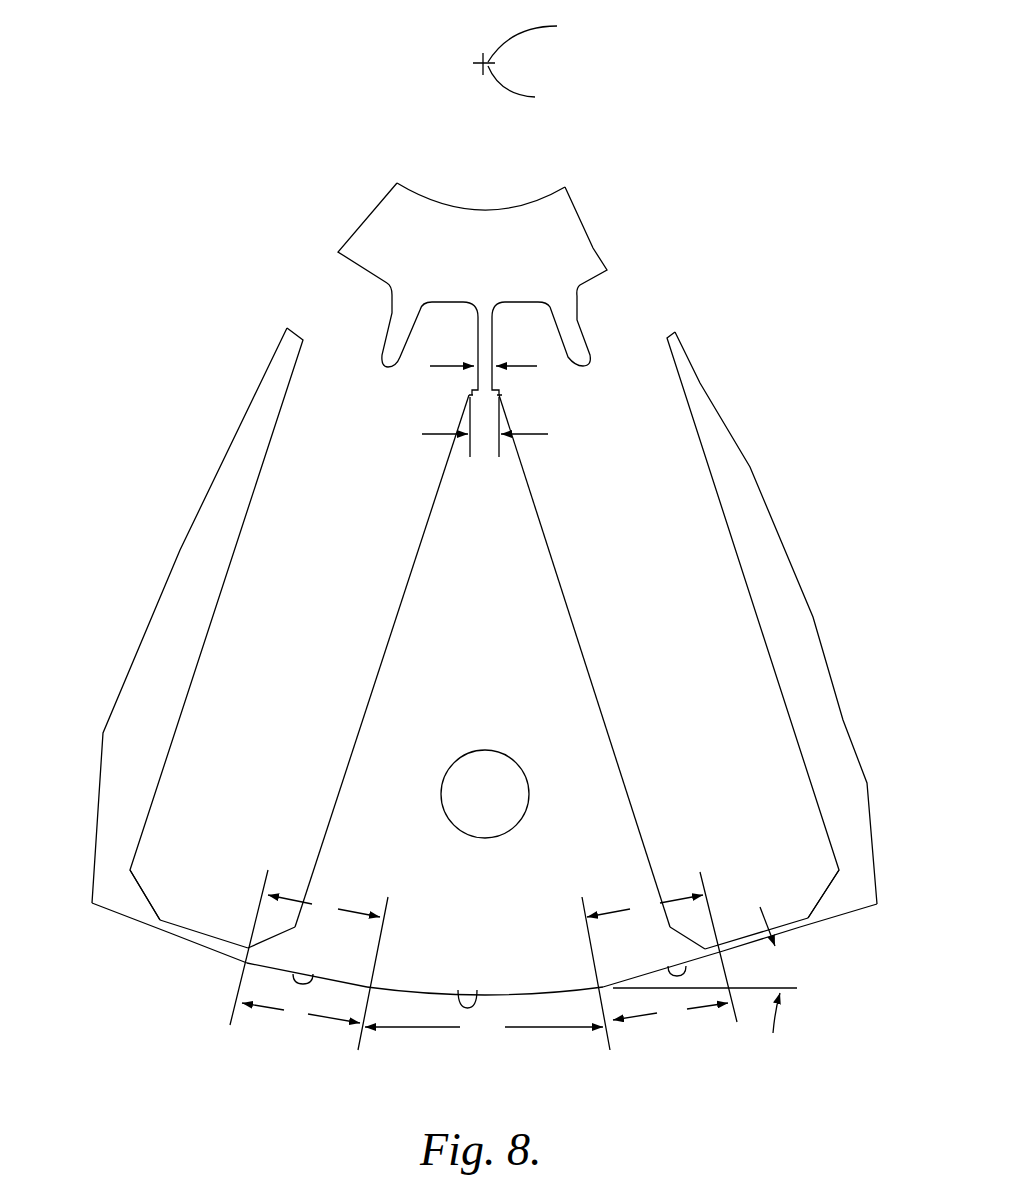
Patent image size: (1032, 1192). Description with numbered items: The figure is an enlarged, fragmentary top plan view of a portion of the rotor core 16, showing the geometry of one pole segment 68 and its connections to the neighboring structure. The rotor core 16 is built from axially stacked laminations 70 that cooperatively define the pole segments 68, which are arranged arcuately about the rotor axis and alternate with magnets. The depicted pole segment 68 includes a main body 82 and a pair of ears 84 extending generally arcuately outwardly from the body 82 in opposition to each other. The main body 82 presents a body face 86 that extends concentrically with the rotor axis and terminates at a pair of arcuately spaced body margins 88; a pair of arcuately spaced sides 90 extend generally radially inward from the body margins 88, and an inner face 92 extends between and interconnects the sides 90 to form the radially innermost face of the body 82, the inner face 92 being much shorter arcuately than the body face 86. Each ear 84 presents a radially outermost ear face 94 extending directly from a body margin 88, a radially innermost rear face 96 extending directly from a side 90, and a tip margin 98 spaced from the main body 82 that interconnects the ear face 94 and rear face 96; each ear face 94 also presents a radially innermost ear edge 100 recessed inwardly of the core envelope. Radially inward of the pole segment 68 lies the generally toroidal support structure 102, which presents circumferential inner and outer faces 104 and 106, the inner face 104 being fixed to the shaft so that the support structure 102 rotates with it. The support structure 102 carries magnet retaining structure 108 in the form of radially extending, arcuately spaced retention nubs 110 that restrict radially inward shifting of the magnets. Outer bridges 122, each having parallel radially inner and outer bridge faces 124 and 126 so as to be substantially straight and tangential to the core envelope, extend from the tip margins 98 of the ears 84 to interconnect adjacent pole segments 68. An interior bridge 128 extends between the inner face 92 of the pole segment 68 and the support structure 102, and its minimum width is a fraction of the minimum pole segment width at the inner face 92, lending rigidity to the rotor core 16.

The rotor core 16 is at (708, 131).
The pole segment 68 is at (543, 645).
The lamination 70 is at (107, 928).
The main body 82 is at (577, 707).
The ear 84 is at (273, 953).
The body face 86 is at (477, 990).
The body margin 88 is at (368, 987).
The side 90 is at (207, 637).
The inner face 92 is at (499, 389).
The ear face 94 is at (313, 974).
The rear face 96 is at (280, 933).
The tip margin 98 is at (245, 962).
The ear edge 100 is at (485, 969).
The support structure 102 is at (557, 233).
The inner face 104 is at (461, 207).
The outer face 106 is at (365, 278).
The magnet retaining structure 108 is at (383, 370).
The retention nub 110 is at (396, 326).
The outer bridge 122 is at (170, 930).
The inner bridge face 124 is at (178, 930).
The outer bridge face 126 is at (203, 950).
The interior bridge 128 is at (488, 345).